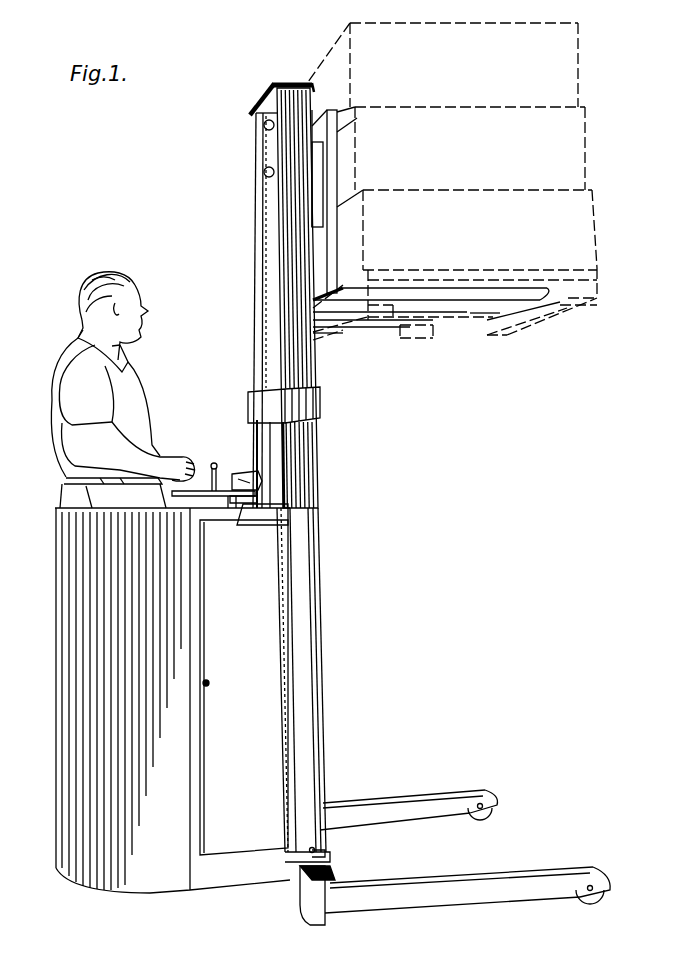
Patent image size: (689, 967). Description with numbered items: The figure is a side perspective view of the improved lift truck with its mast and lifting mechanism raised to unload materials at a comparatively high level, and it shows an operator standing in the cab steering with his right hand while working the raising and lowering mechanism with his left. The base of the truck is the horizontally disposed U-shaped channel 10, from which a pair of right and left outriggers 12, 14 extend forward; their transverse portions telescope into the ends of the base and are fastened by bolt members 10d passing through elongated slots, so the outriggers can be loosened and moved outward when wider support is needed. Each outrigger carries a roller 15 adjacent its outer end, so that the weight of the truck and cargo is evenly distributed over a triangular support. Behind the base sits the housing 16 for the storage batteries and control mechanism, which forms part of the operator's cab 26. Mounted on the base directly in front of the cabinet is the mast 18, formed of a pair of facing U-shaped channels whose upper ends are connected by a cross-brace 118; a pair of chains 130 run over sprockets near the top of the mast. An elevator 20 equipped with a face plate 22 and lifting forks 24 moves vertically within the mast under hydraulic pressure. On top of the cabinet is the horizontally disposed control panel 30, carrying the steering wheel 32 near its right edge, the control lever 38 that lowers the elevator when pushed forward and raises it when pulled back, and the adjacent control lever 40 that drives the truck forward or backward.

The U-shaped channel 10 is at (330, 866).
The bolt members 10d is at (318, 853).
The outrigger 12 is at (414, 813).
The outrigger 14 is at (471, 901).
The rollers 15 is at (479, 821).
The housing 16 is at (290, 671).
The mast 18 is at (315, 489).
The elevator 20 is at (286, 185).
The face plate 22 is at (325, 257).
The lifting forks 24 is at (444, 303).
The operator's cab 26 is at (68, 771).
The control panel 30 is at (240, 506).
The steering wheel 32 is at (231, 510).
The control lever 38 is at (211, 470).
The control lever 40 is at (241, 478).
The cross-brace 118 is at (248, 395).
The chains 130 is at (260, 156).